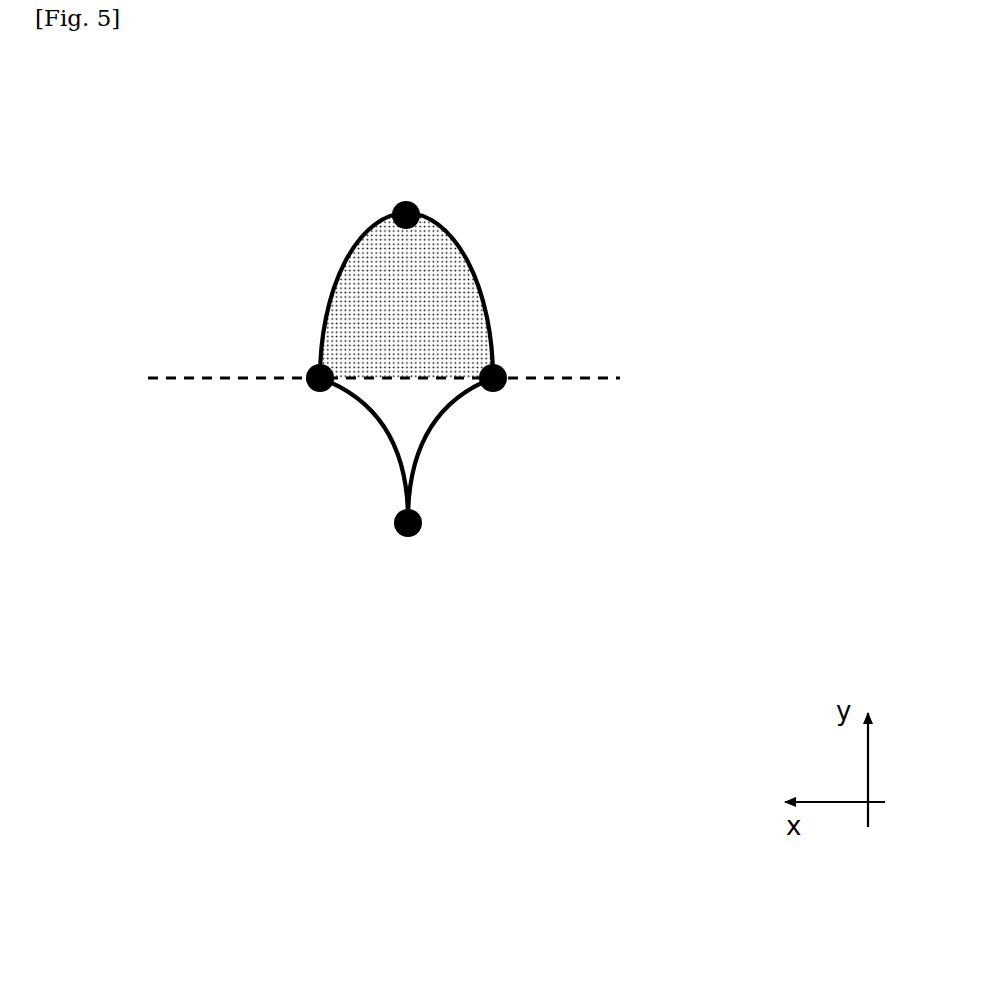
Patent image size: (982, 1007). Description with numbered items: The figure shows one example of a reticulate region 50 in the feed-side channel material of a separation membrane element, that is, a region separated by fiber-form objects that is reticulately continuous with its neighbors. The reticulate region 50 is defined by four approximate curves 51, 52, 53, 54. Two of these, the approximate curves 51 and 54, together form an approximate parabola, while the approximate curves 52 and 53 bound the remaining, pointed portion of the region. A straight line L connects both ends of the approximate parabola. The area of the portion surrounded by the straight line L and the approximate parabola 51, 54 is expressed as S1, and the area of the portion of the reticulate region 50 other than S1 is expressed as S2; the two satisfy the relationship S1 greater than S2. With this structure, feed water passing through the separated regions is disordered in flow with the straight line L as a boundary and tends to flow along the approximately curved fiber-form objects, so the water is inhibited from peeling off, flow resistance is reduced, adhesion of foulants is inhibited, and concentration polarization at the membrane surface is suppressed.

The reticulate region 50 is at (430, 345).
The approximate curve 51 is at (326, 297).
The approximate curve 52 is at (380, 429).
The approximate curve 53 is at (437, 433).
The approximate curve 54 is at (484, 302).
The area surrounded by straight line L and approximate parabola S1 is at (420, 277).
The area of the remaining portion of the reticulate region S2 is at (409, 420).
The straight line L is at (359, 379).